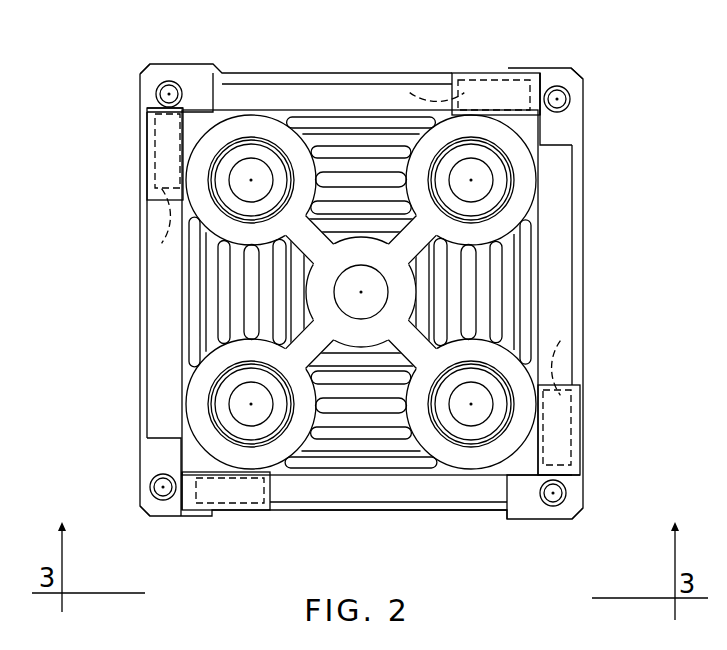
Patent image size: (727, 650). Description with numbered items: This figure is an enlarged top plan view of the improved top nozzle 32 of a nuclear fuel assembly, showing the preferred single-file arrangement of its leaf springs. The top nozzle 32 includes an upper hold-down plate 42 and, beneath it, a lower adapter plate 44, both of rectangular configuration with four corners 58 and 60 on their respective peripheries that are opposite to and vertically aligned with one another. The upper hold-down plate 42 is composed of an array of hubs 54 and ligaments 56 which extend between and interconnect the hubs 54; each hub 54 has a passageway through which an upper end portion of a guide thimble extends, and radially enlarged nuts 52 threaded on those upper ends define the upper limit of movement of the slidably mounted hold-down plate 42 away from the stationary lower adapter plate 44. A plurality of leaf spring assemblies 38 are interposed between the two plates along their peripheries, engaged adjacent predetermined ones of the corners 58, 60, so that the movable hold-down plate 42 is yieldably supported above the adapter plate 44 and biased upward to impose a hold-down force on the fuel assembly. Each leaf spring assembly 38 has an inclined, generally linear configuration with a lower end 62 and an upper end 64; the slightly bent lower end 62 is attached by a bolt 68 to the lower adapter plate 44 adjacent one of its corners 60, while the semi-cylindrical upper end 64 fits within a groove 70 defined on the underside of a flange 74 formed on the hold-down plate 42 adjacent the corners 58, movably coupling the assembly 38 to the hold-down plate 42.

The top nozzle 32 is at (586, 150).
The leaf spring assemblies 38 is at (308, 72).
The upper hold-down plate 42 is at (538, 371).
The lower adapter plate 44 is at (448, 512).
The radially enlarged nuts 52 is at (210, 178).
The hubs 54 is at (418, 140).
The ligaments 56 is at (413, 335).
The corners 58 is at (537, 80).
The corners 60 is at (143, 72).
The lower end 62 is at (196, 73).
The upper end 64 is at (497, 100).
The bolt 68 is at (167, 81).
The groove 70 is at (408, 90).
The flange 74 is at (468, 72).